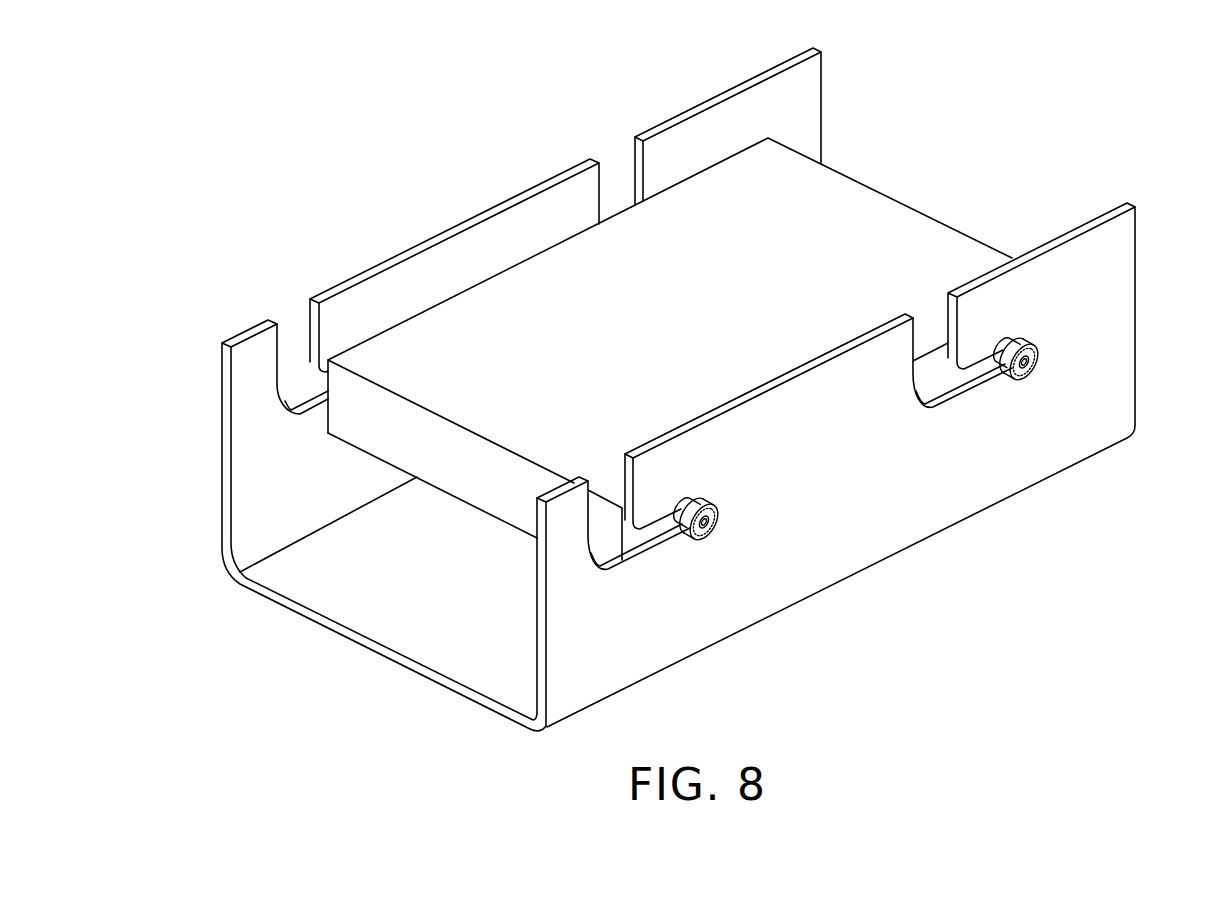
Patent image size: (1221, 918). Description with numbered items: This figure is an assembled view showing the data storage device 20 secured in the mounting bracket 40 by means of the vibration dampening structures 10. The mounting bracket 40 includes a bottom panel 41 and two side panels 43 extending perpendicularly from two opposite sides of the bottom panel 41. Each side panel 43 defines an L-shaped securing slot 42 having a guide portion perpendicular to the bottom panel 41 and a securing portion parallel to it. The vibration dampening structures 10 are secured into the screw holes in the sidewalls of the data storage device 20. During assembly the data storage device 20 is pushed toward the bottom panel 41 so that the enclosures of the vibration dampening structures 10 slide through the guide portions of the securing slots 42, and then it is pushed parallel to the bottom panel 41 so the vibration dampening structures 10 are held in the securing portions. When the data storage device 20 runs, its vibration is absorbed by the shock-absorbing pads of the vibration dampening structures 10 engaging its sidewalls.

The vibration dampening structure 10 is at (685, 542).
The data storage device 20 is at (867, 230).
The mounting bracket 40 is at (710, 102).
The bottom panel 41 is at (398, 617).
The securing slot 42 is at (627, 545).
The side panel 43 is at (1112, 320).